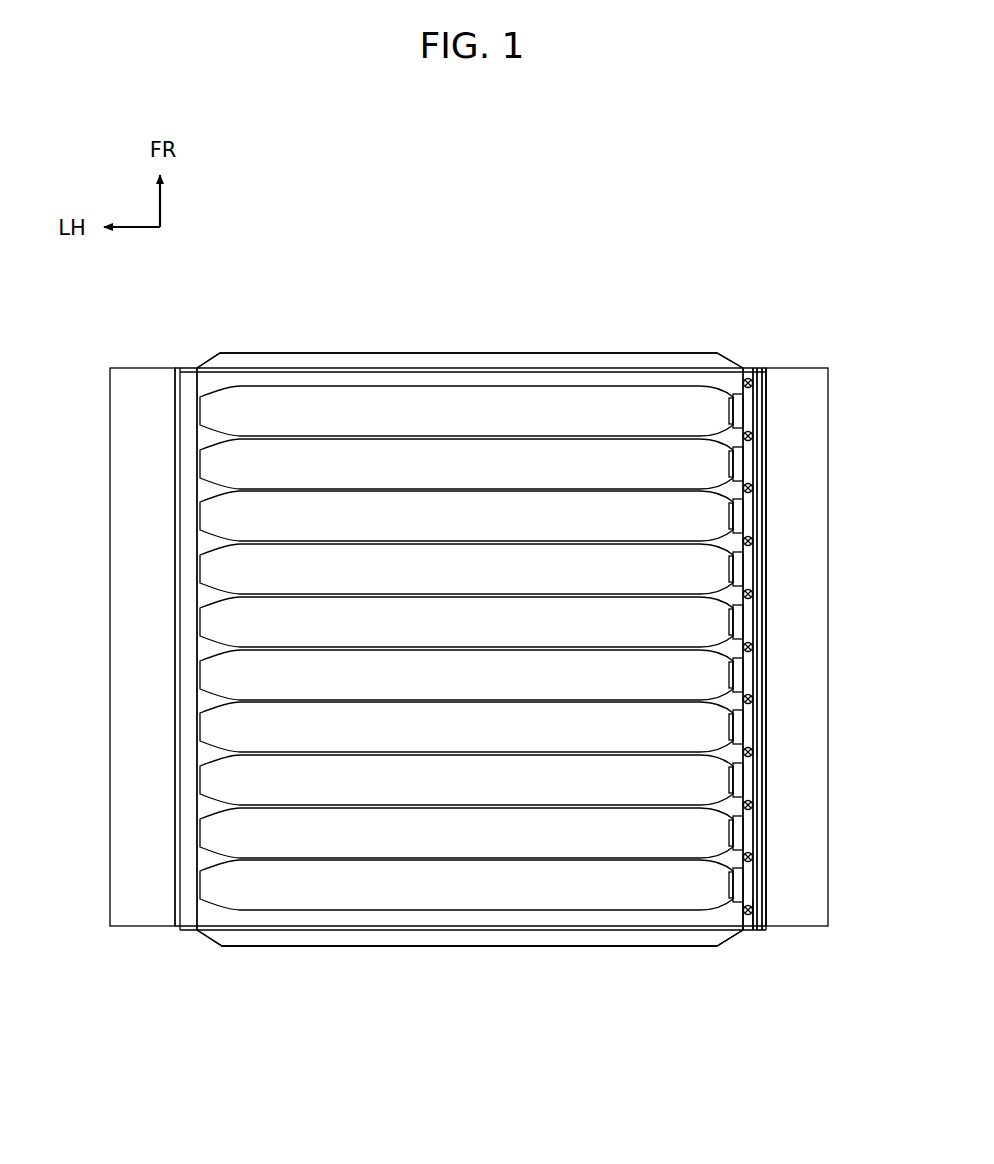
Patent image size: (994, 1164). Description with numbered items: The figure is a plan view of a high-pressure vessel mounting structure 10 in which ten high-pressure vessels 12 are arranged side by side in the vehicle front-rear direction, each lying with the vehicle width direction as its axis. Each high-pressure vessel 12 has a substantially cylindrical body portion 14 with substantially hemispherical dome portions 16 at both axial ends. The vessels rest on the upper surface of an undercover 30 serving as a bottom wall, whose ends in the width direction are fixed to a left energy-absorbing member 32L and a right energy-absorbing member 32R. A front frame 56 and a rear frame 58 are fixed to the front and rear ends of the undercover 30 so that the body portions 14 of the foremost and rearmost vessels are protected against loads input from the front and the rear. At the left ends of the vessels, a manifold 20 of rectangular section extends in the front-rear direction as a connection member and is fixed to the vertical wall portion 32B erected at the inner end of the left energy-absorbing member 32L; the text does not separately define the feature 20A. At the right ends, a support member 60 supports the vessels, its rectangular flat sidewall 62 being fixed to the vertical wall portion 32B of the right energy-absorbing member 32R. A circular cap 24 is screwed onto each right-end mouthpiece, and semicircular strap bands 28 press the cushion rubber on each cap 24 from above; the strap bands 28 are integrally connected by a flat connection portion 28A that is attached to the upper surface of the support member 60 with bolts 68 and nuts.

The high-pressure vessel mounting structure 10 is at (614, 326).
The high-pressure vessel 12 is at (459, 384).
The body portion 14 is at (496, 896).
The dome portion 16 is at (211, 888).
The manifold 20 is at (189, 365).
The left end wall inner surface 20A is at (202, 383).
The cap 24 is at (740, 676).
The strap band 28 is at (768, 878).
The connection portion 28A is at (757, 532).
The undercover 30 is at (310, 913).
The left energy-absorbing member 32L is at (145, 902).
The right energy-absorbing member 32R is at (798, 908).
The vertical wall portion 32B is at (175, 630).
The front frame 56 is at (370, 352).
The rear frame 58 is at (556, 947).
The support member 60 is at (759, 366).
The sidewall 62 is at (757, 920).
The bolt 68 is at (750, 743).